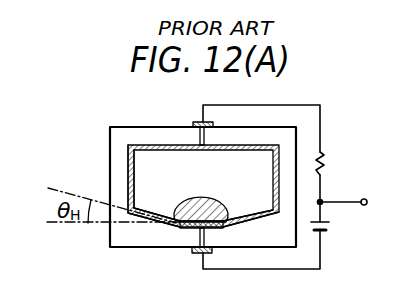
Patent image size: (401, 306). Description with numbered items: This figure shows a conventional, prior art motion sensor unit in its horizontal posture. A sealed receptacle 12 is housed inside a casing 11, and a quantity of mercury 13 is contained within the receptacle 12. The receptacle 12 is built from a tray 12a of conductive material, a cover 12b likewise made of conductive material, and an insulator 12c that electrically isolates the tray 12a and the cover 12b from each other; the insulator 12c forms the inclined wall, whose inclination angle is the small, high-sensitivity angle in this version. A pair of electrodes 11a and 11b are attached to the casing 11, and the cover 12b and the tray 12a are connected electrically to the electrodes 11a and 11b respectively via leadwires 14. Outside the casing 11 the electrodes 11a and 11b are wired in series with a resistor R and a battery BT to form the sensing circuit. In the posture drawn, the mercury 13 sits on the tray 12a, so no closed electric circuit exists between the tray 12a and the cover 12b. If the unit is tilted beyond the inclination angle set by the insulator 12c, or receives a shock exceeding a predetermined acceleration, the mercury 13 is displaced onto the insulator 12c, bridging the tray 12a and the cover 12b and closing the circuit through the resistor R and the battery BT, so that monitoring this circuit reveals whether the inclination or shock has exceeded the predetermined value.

The casing 11 is at (142, 126).
The electrode 11a is at (214, 124).
The electrode 11b is at (198, 254).
The receptacle 12 is at (126, 168).
The tray 12a is at (222, 226).
The cover 12b is at (135, 178).
The insulator 12c is at (238, 215).
The mercury 13 is at (197, 197).
The leadwires 14 is at (203, 138).
The resistor R is at (328, 164).
The battery BT is at (337, 228).